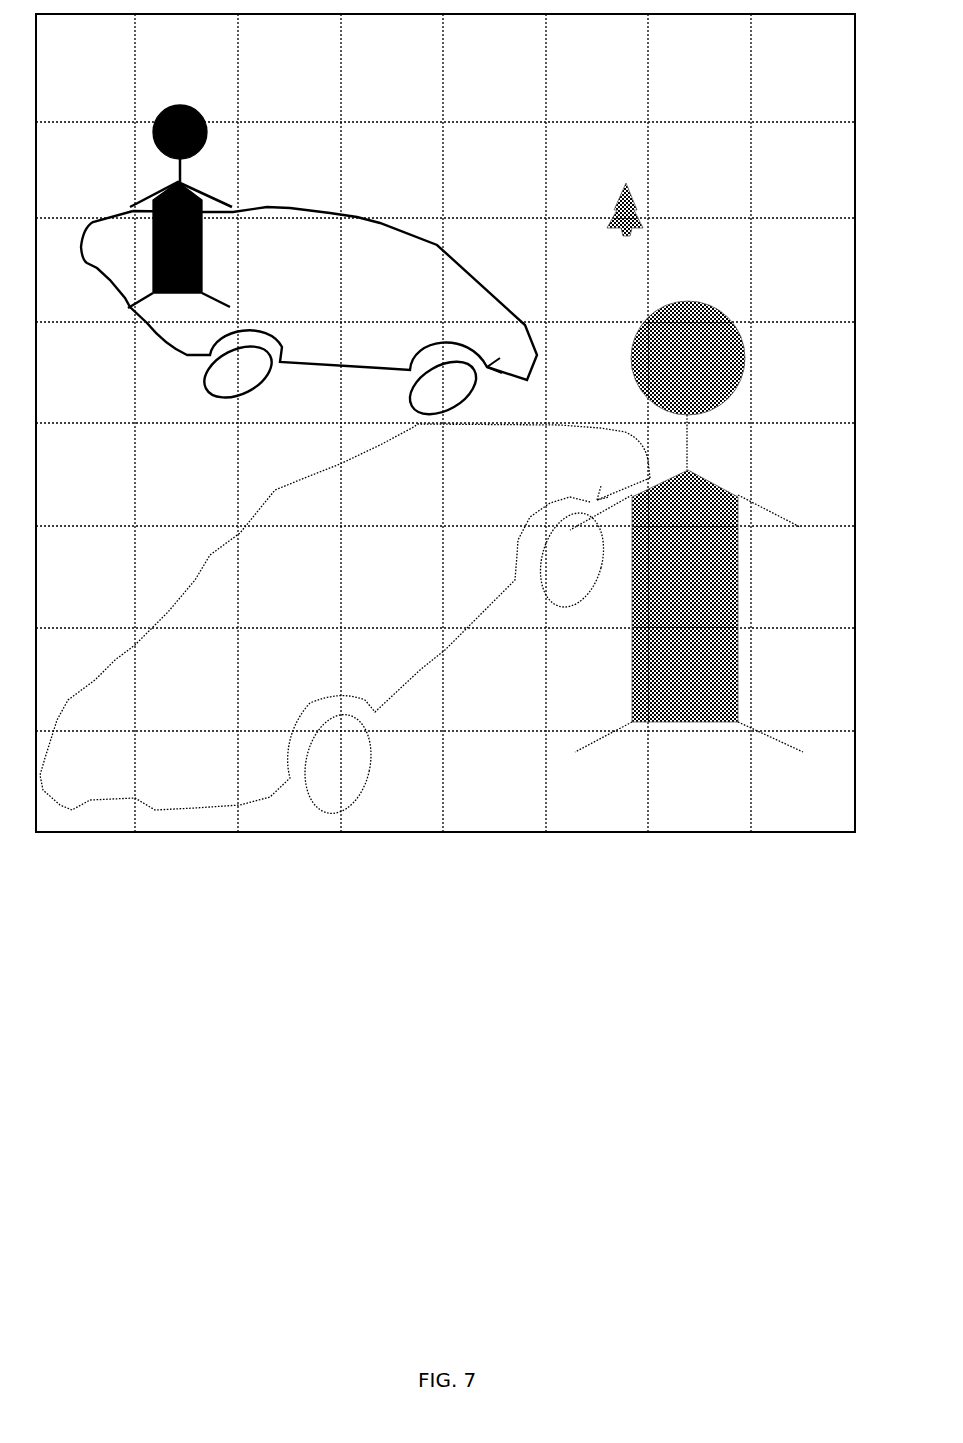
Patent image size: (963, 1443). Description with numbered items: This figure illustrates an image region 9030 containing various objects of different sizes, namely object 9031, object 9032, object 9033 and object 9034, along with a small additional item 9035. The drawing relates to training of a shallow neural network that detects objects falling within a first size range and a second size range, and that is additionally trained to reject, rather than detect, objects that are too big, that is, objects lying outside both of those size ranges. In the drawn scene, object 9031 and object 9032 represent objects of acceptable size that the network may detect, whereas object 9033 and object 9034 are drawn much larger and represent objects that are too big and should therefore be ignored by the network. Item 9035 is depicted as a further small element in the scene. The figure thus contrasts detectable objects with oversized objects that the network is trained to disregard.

The grid image / bird's-eye view map 9030 is at (453, 931).
The object 9031 is at (202, 256).
The object 9032 is at (380, 218).
The object 9033 is at (710, 596).
The object 9034 is at (168, 612).
The tree landmark icon 9035 is at (613, 202).